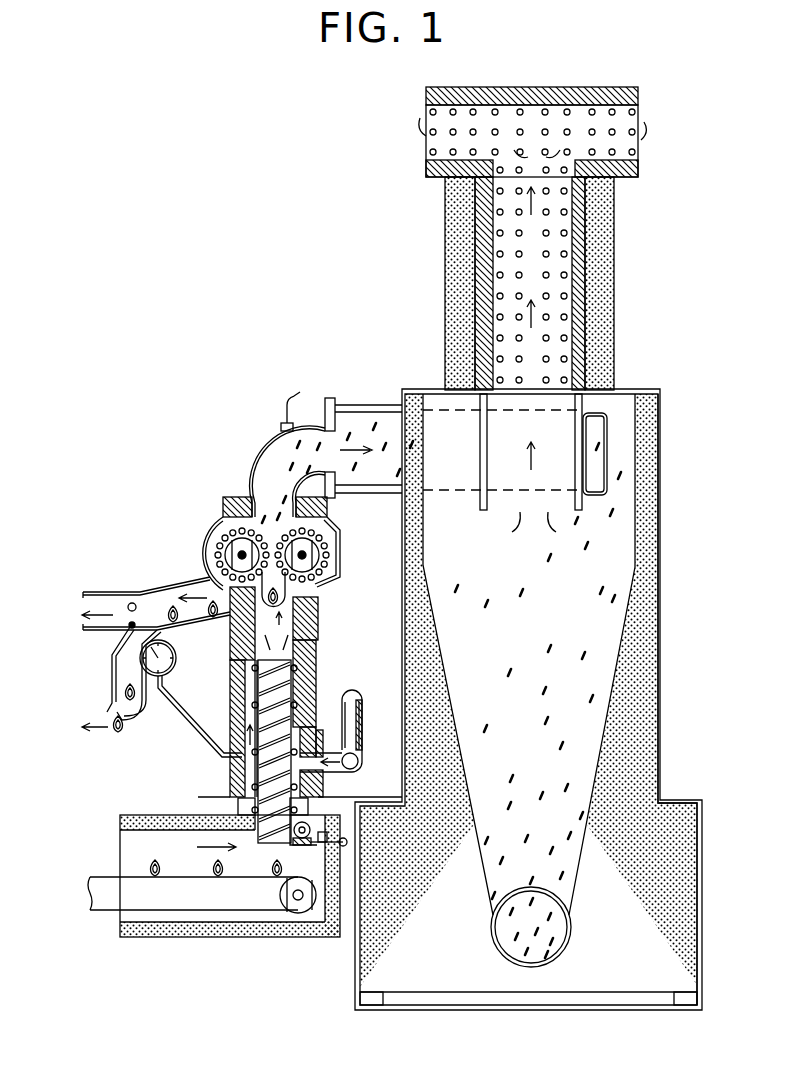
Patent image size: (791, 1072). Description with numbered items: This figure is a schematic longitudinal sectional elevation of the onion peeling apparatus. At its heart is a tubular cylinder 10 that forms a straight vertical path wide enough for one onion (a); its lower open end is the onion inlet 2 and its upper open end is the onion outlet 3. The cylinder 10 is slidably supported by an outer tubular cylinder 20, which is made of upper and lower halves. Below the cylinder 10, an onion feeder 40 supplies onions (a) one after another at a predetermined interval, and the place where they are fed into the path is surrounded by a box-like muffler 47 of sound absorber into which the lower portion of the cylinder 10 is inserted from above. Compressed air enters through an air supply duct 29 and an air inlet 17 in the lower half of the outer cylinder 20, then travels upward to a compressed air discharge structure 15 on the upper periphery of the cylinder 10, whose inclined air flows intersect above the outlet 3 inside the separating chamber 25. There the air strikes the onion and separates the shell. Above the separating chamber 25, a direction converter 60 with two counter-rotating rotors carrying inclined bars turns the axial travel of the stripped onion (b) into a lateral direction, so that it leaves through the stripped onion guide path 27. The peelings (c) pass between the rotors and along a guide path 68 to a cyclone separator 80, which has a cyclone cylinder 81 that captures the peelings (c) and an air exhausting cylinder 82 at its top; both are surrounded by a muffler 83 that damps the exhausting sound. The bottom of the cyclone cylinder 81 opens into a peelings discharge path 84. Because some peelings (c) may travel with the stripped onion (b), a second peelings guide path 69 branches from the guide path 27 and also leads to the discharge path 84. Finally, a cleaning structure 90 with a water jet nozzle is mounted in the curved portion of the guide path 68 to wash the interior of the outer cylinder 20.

The onion inlet 2 is at (268, 847).
The onion outlet 3 is at (275, 658).
The tubular cylinder 10 is at (235, 695).
The compressed air discharge structure 15 is at (315, 657).
The air inlet 17 is at (327, 779).
The outer tubular cylinder 20 is at (328, 678).
The separating chamber 25 is at (290, 622).
The stripped onion guide path 27 is at (173, 592).
The air supply duct 29 is at (362, 718).
The onion feeder 40 is at (102, 869).
The muffler 47 is at (155, 813).
The direction converter 60 is at (250, 500).
The guide path 68 is at (366, 403).
The second peelings guide path 69 is at (83, 592).
The cyclone separator 80 is at (679, 463).
The cyclone cylinder 81 is at (620, 655).
The air exhausting cylinder 82 is at (580, 267).
The muffler 83 is at (657, 760).
The peelings discharge path 84 is at (495, 945).
The cleaning structure 90 is at (271, 405).
The onion a is at (268, 872).
The stripped onion b is at (282, 591).
The peelings c is at (271, 461).